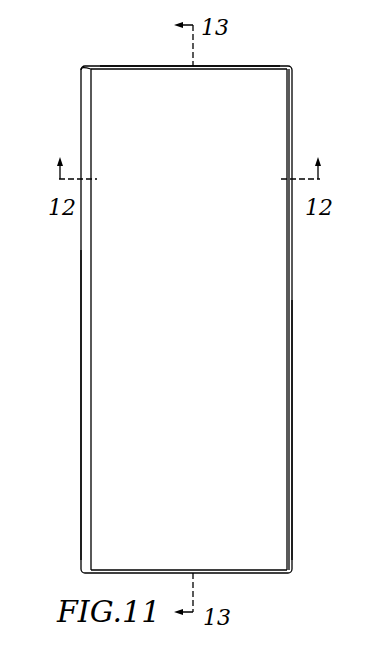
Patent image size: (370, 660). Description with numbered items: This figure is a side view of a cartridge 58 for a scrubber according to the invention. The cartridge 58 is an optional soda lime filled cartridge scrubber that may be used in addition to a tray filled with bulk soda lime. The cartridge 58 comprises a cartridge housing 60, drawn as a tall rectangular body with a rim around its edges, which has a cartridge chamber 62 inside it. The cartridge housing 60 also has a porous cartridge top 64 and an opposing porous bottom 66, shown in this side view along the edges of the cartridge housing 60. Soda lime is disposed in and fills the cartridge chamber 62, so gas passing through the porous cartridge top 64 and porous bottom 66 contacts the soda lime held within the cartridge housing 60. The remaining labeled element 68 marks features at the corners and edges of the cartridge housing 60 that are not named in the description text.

The cartridge 58 is at (304, 83).
The cartridge housing 60 is at (303, 137).
The cartridge chamber 62 is at (204, 319).
The porous cartridge top 64 is at (292, 418).
The porous bottom 66 is at (81, 372).
The edge flange 68 is at (131, 65).